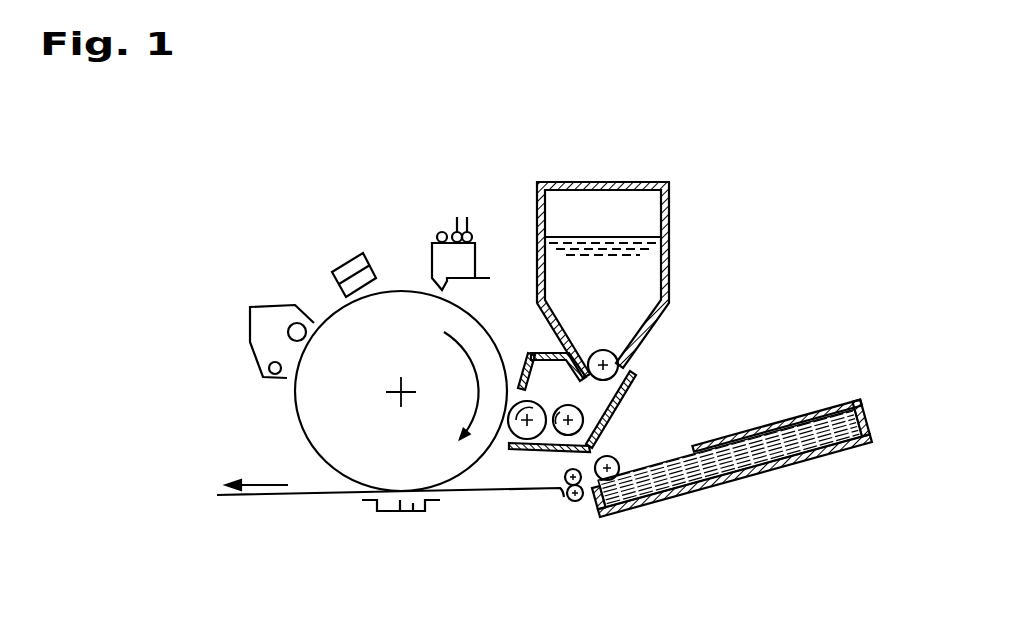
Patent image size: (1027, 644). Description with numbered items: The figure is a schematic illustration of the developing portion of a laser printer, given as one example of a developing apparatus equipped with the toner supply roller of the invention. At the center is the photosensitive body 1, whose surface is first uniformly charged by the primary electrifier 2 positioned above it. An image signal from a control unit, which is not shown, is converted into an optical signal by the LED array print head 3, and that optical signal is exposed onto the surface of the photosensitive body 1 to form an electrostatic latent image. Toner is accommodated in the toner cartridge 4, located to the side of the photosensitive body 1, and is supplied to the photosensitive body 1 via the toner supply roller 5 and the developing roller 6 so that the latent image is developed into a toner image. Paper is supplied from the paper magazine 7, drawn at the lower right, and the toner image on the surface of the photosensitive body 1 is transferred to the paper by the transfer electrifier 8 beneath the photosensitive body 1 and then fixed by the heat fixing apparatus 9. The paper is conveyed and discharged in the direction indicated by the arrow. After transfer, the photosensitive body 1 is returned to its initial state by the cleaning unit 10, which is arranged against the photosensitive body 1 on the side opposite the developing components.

The photosensitive body 1 is at (300, 417).
The primary electrifier 2 is at (347, 262).
The LED array print head 3 is at (432, 260).
The toner cartridge 4 is at (650, 282).
The toner supply roller 5 is at (582, 405).
The developing roller 6 is at (523, 430).
The paper magazine 7 is at (772, 473).
The transfer electrifier 8 is at (413, 511).
The heat fixing apparatus 9 is at (377, 512).
The cleaning unit 10 is at (250, 322).